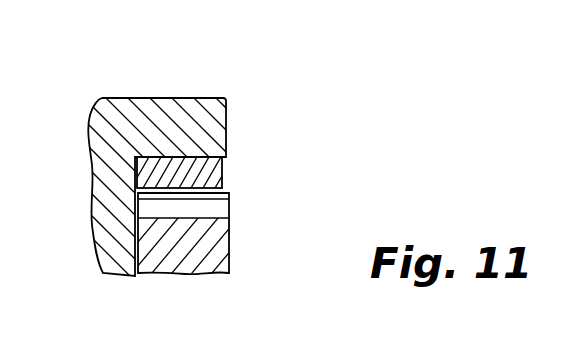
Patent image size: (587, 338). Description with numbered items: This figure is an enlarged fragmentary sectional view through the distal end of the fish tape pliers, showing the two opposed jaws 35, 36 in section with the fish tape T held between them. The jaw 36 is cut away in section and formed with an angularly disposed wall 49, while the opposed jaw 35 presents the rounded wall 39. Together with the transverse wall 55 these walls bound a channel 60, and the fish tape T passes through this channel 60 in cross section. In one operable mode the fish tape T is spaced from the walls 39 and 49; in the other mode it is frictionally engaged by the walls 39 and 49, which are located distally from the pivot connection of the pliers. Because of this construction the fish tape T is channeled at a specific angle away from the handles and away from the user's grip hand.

The jaw 36 is at (138, 98).
The angularly disposed wall 49 is at (212, 157).
The channel 60 is at (232, 158).
The fish tape T is at (226, 172).
The rounded wall 39 is at (229, 191).
The jaw 35 is at (167, 253).
The transverse wall 55 is at (137, 162).